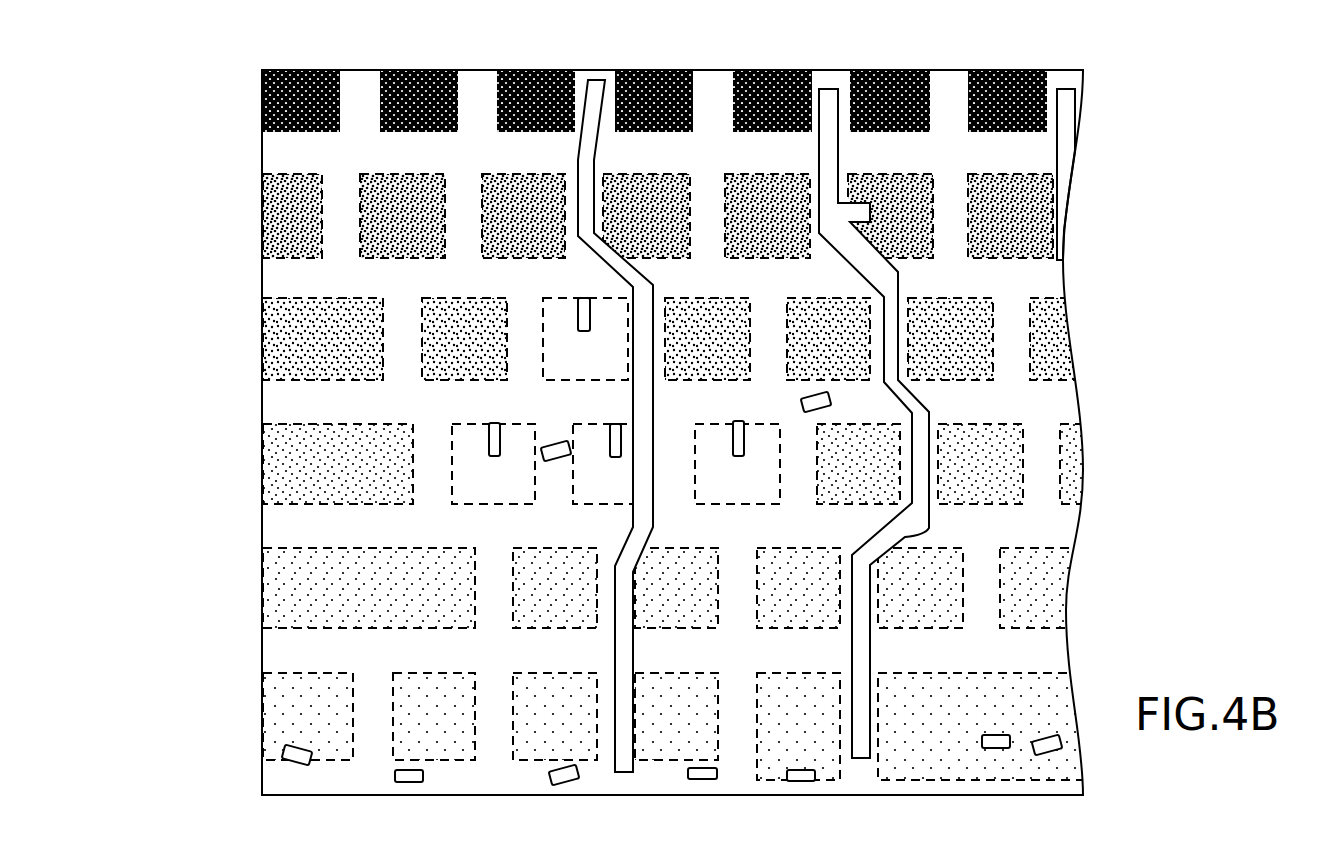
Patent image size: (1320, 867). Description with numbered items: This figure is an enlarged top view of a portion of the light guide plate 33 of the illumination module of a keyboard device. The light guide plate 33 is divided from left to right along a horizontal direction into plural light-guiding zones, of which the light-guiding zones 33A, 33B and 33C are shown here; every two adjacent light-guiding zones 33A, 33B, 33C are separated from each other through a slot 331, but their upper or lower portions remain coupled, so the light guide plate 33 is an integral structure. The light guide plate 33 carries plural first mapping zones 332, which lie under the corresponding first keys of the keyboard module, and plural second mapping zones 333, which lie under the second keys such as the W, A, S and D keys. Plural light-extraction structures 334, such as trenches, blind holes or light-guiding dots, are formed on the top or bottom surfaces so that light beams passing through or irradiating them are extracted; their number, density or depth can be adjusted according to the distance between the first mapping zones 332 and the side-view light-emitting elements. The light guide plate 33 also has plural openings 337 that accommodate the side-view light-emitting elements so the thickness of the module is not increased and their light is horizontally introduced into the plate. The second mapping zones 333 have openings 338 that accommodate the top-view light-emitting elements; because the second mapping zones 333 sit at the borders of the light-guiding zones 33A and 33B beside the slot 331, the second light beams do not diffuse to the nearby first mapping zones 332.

The light guide plate 33 is at (238, 125).
The slot 331 is at (593, 105).
The first mapping zones 332 is at (382, 110).
The second mapping zones 333 is at (543, 358).
The light-extraction structures 334 is at (277, 225).
The openings 337 is at (556, 446).
The openings 338 is at (580, 300).
The light-guiding zone 33A is at (385, 653).
The light-guiding zone 33B is at (763, 653).
The light-guiding zone 33C is at (983, 653).